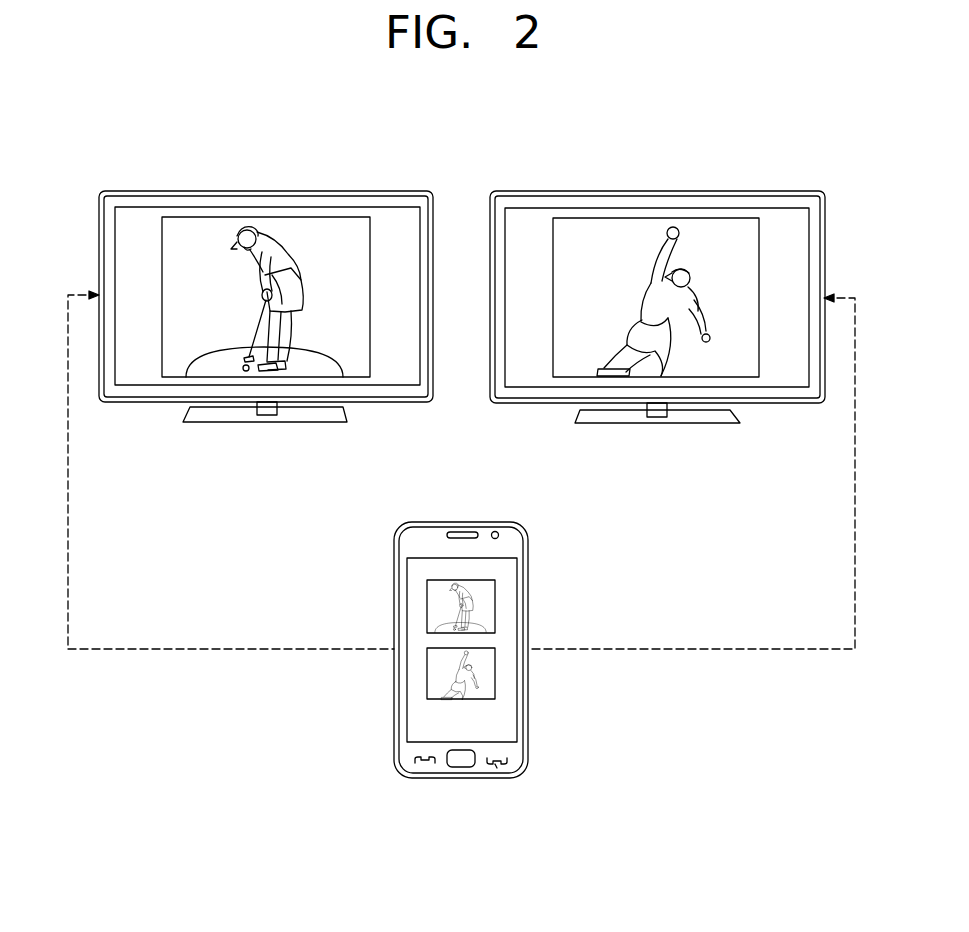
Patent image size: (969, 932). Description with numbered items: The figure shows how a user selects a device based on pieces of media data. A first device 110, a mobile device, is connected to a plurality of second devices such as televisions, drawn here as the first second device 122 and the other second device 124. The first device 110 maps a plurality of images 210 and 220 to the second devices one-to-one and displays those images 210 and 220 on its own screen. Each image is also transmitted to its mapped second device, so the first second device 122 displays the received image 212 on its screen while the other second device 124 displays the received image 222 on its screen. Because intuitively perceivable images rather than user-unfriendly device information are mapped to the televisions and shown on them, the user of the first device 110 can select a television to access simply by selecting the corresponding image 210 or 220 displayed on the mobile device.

The first device 110 is at (496, 634).
The second device #1 122 is at (266, 273).
The second device #2 124 is at (657, 274).
The image 210 is at (497, 607).
The received image 212 is at (270, 216).
The image 220 is at (497, 677).
The received image 222 is at (657, 216).